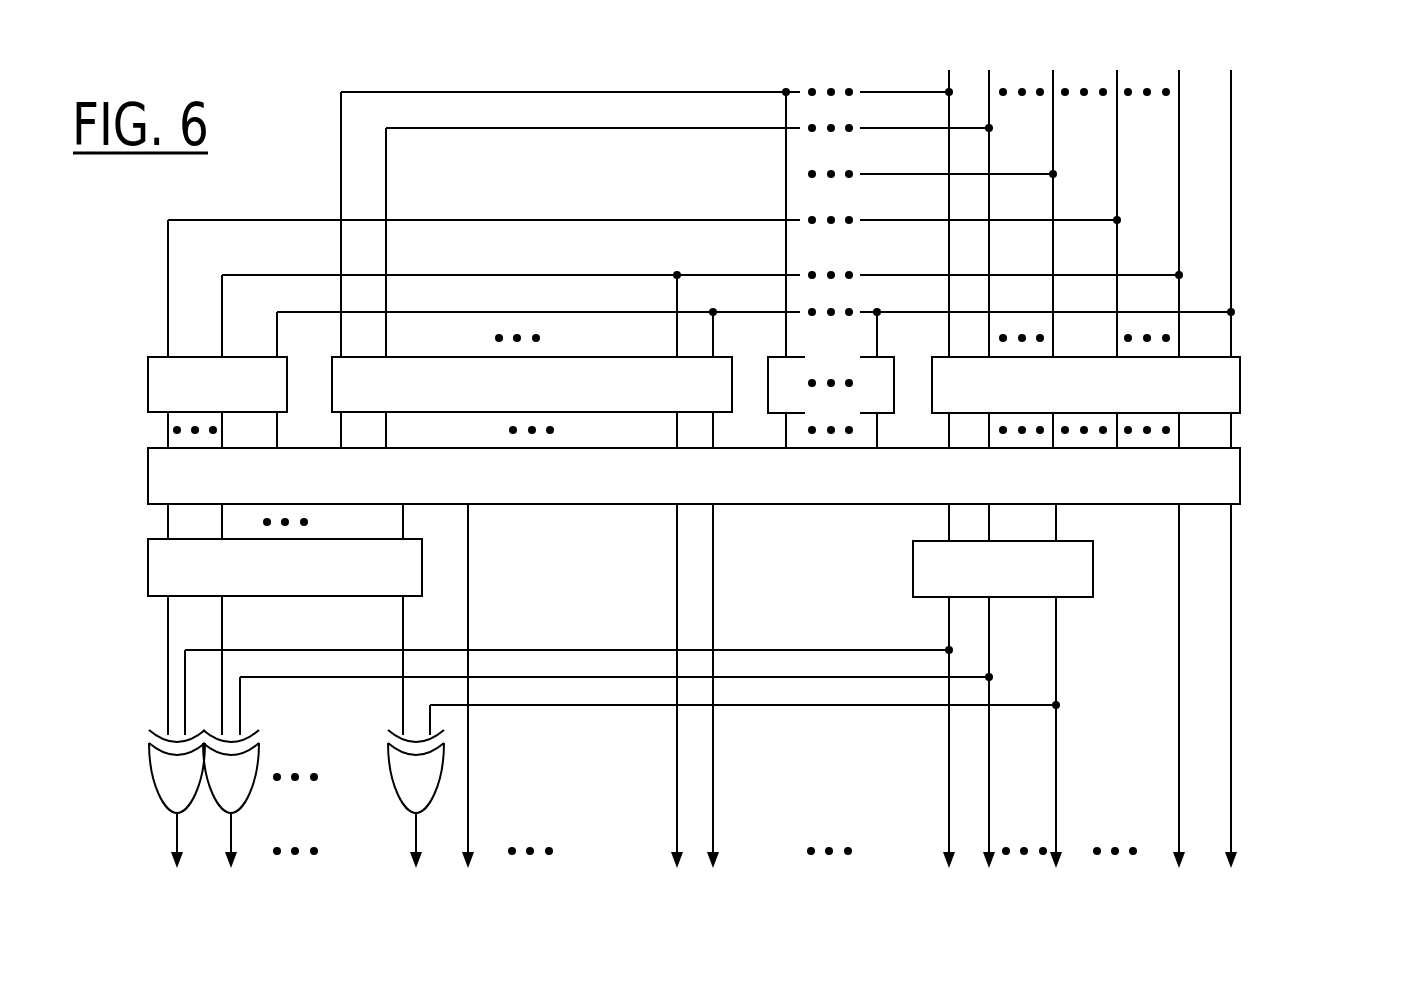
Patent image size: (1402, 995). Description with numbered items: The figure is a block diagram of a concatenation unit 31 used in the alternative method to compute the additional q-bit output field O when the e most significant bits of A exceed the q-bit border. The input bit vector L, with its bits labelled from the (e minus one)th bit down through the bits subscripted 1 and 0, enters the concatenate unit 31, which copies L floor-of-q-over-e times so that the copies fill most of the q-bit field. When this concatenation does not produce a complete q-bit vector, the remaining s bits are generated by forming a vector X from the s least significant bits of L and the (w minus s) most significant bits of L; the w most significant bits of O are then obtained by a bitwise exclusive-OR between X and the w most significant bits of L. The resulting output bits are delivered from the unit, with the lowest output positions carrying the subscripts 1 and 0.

The concatenate unit 31 is at (1318, 338).
The input line I1 1 is at (1181, 192).
The input line I0 0 is at (1231, 192).